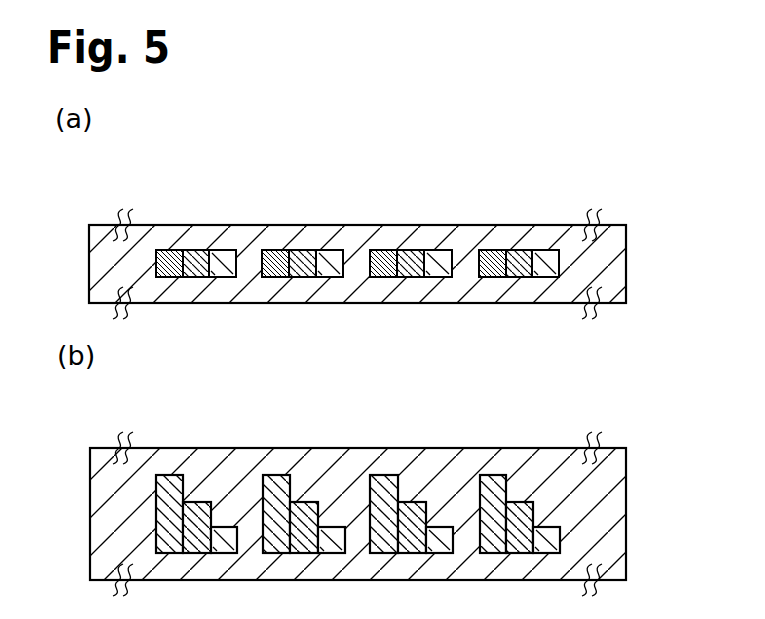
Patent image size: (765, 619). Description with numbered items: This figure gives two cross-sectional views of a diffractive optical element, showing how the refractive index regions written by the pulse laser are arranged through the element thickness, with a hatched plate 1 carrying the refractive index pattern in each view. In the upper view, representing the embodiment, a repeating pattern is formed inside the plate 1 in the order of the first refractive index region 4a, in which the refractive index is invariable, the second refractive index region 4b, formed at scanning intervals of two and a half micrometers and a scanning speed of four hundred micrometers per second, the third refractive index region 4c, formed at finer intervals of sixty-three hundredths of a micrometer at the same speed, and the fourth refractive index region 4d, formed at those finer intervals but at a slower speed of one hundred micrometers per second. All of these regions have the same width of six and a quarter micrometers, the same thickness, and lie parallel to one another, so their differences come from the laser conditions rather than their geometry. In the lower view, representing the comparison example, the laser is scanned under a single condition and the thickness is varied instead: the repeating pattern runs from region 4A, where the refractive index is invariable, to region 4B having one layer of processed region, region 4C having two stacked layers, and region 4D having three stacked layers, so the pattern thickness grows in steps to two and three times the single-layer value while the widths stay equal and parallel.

The substrate 1 is at (430, 213).
The first refractive index region 4a is at (357, 262).
The second refractive index region 4b is at (222, 250).
The third refractive index region 4c is at (303, 250).
The fourth refractive index region 4d is at (168, 250).
The region where the refractive index is invariable 4A is at (357, 540).
The region having one layer of processed region 4B is at (222, 527).
The region having two layers of processed region 4C is at (303, 502).
The region having three layers of processed region 4D is at (168, 475).